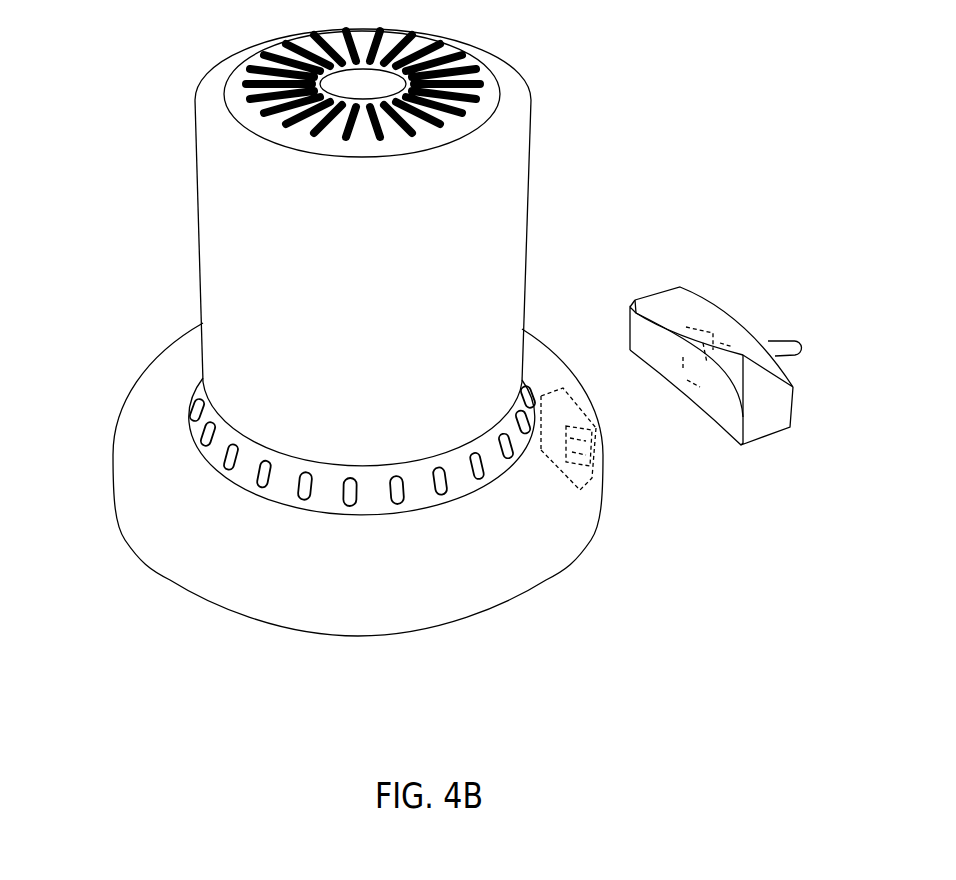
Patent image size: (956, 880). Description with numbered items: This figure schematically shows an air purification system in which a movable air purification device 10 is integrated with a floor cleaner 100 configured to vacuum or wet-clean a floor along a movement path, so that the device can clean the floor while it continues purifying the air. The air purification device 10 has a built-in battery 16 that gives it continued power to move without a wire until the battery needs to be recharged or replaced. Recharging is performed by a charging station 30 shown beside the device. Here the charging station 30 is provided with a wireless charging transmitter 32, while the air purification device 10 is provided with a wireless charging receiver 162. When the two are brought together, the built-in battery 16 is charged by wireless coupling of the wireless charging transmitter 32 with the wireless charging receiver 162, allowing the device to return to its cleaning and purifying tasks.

The floor cleaner 100 is at (387, 348).
The air purification device 10 is at (227, 177).
The built-in battery 16 is at (546, 455).
The wireless charging receiver 162 is at (573, 468).
The charging station 30 is at (726, 317).
The wireless charging transmitter 32 is at (698, 328).